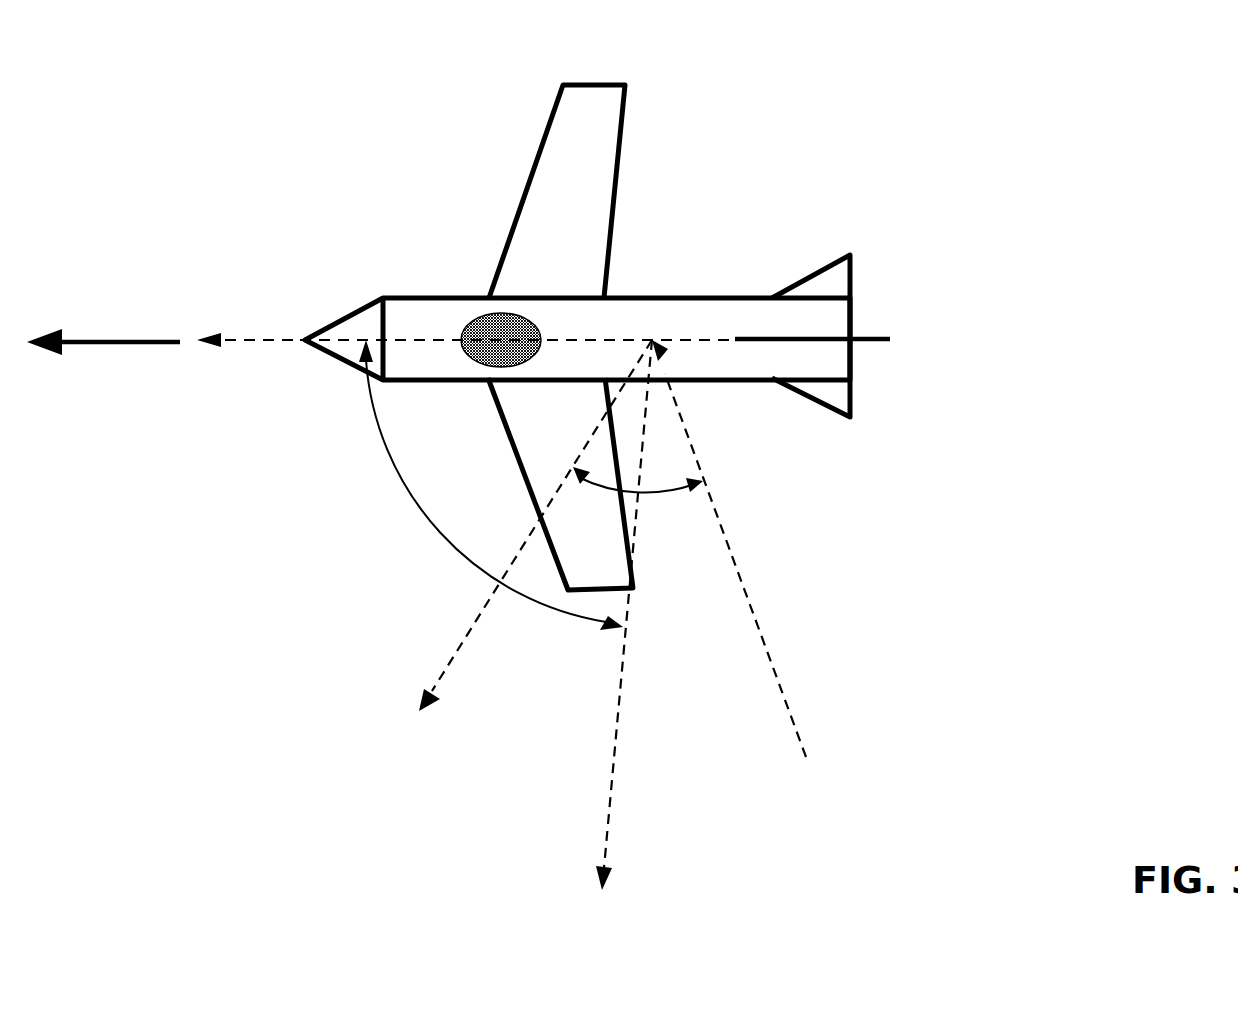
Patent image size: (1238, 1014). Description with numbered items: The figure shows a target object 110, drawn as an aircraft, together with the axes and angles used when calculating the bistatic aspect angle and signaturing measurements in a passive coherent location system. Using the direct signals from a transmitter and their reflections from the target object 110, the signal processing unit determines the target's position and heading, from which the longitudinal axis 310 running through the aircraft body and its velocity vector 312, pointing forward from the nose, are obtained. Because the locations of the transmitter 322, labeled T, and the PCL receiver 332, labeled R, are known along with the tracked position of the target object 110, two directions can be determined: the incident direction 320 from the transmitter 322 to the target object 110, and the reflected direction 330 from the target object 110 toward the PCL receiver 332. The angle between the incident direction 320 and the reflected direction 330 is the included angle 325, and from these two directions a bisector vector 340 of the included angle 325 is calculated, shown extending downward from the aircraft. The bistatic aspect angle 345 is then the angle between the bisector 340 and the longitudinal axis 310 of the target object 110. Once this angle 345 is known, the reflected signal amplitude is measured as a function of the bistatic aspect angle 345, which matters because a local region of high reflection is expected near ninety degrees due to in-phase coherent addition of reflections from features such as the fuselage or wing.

The target object 110 is at (597, 85).
The longitudinal axis 310 is at (655, 339).
The velocity vector 312 is at (122, 341).
The incident direction 320 is at (743, 580).
The transmitter 322 is at (853, 777).
The included angle 325 is at (663, 494).
The reflected direction 330 is at (457, 643).
The PCL receiver 332 is at (368, 723).
The bisector vector 340 is at (615, 753).
The bistatic aspect angle 345 is at (397, 473).